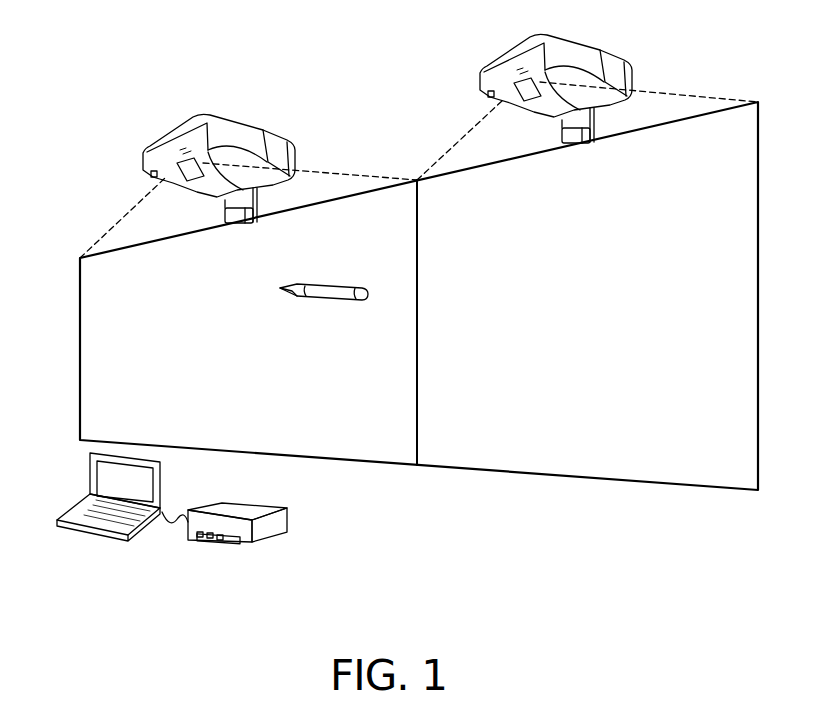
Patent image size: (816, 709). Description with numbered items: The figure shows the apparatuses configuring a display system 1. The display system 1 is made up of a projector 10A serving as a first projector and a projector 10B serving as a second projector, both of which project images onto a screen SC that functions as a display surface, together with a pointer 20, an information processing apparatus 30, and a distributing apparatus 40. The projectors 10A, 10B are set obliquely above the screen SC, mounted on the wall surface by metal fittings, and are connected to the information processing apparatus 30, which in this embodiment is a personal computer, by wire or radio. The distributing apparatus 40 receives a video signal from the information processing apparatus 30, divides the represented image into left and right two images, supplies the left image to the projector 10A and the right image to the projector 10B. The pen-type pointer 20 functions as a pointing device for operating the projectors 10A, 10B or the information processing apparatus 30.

The display system 1 is at (118, 150).
The projector 10A is at (237, 126).
The projector 10B is at (480, 86).
The pointer 20 is at (323, 285).
The information processing apparatus 30 is at (82, 503).
The distributing apparatus 40 is at (240, 505).
The screen SC is at (80, 327).